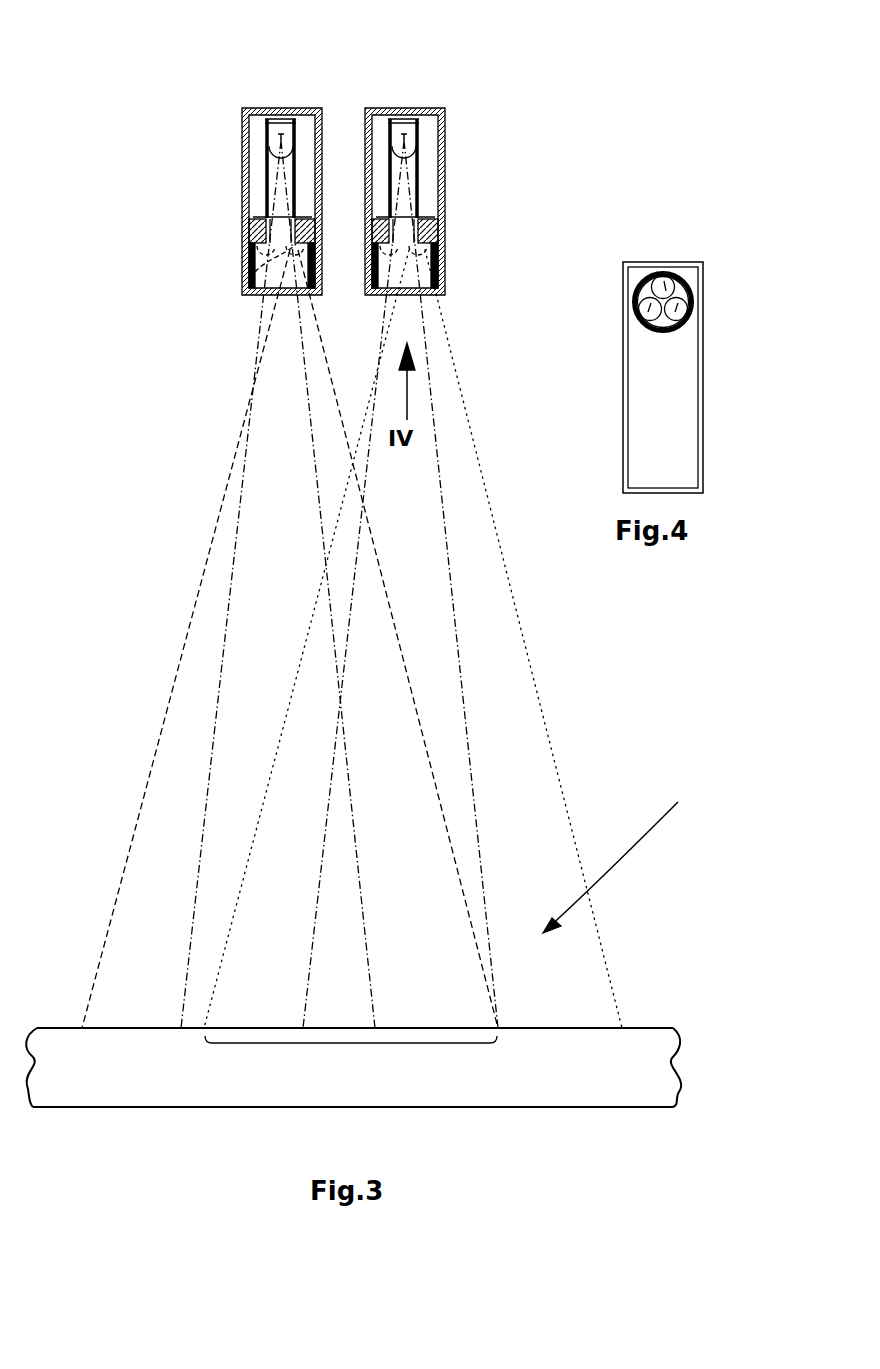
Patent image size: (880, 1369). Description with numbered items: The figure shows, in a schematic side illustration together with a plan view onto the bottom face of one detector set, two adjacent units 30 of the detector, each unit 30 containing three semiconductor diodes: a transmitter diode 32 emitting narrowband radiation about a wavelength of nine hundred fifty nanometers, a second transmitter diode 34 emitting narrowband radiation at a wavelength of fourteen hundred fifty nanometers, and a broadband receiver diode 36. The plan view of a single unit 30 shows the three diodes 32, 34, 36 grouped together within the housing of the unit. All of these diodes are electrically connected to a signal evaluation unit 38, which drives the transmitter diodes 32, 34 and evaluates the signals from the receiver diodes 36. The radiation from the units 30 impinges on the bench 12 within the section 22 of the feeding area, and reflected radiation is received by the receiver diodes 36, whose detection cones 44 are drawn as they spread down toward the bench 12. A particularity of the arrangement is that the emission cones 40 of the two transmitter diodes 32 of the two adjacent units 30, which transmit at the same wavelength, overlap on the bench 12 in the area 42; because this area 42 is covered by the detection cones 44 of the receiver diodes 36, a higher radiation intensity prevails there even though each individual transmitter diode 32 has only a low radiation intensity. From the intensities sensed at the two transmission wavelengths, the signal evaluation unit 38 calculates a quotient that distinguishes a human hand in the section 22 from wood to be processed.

In FIG. 3, the bench 12 is at (555, 1078).
In FIG. 3, the section 22 is at (627, 857).
In FIG. 3, the unit 30 is at (242, 158).
In FIG. 4, the unit 30 is at (628, 410).
In FIG. 3, the transmitter diode 32 is at (249, 262).
In FIG. 4, the transmitter diode 32 is at (638, 322).
In FIG. 4, the second transmitter diode 34 is at (690, 328).
In FIG. 3, the receiver diode 36 is at (282, 118).
In FIG. 4, the receiver diode 36 is at (665, 282).
In FIG. 3, the signal evaluation unit 38 is at (322, 340).
In FIG. 3, the emission cone 40 is at (444, 335).
In FIG. 3, the area 42 is at (351, 1055).
In FIG. 3, the detection cone 44 is at (466, 723).